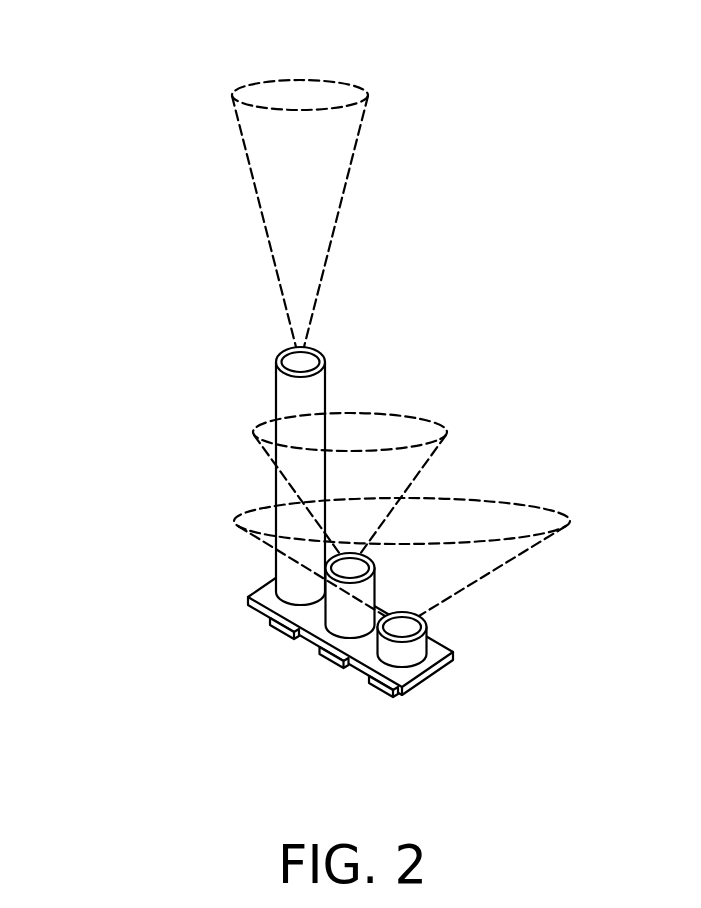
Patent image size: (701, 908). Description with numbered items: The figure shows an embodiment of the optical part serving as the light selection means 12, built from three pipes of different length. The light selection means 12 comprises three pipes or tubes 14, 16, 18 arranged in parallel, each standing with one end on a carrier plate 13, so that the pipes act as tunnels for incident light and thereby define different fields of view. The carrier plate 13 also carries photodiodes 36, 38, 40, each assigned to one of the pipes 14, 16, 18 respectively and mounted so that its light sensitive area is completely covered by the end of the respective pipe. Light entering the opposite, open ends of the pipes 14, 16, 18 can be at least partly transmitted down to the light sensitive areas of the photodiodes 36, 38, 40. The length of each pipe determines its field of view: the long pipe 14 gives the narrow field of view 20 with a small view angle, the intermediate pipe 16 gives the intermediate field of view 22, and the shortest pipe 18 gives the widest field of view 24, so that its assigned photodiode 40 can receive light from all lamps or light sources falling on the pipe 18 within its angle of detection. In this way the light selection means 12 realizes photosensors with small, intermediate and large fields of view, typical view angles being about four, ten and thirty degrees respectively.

The light selection means 12 is at (116, 190).
The carrier plate 13 is at (428, 678).
The pipe 14 is at (277, 394).
The pipe 16 is at (375, 583).
The pipe 18 is at (427, 645).
The field of view 20 is at (355, 98).
The field of view 22 is at (440, 433).
The field of view 24 is at (560, 522).
The photodiode 36 is at (287, 633).
The photodiode 38 is at (334, 663).
The photodiode 40 is at (383, 692).